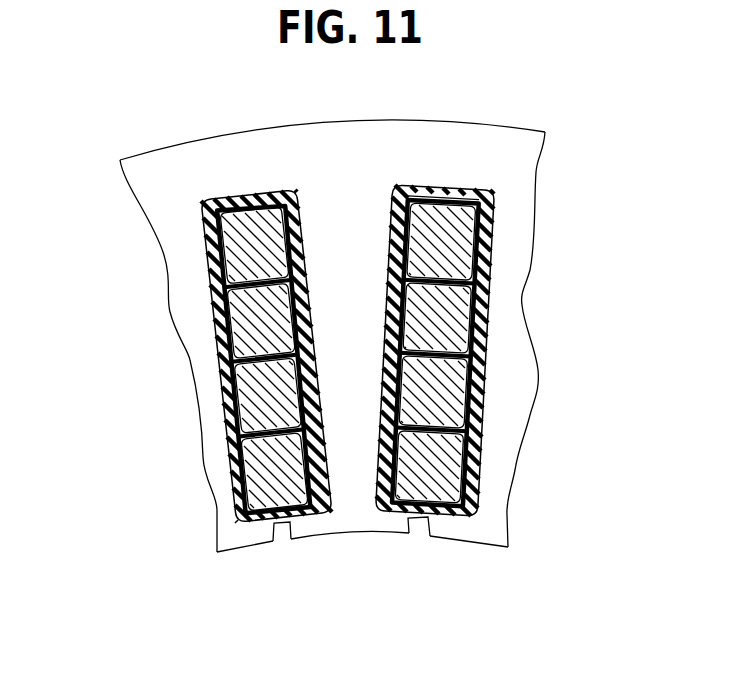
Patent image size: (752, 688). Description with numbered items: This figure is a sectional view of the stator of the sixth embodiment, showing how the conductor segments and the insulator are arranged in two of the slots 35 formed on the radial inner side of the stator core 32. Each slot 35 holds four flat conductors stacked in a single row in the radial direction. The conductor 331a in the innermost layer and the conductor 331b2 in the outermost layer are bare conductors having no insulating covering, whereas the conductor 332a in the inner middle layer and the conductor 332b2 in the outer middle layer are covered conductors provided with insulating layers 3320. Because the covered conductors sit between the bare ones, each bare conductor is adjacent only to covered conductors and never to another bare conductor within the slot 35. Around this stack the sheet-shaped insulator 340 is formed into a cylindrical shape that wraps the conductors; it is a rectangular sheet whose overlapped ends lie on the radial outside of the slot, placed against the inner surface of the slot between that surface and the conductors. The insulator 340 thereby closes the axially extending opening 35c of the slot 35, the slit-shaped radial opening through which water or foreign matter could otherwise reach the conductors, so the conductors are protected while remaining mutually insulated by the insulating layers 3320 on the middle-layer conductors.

The stator core 32 is at (323, 150).
The insulator 340 is at (492, 190).
The conductor in outer most layer 331b2 is at (488, 250).
The conductor in outer middle layer 332b2 is at (488, 303).
The conductor in inner middle layer 332a is at (488, 380).
The conductor in inner most layer 331a is at (458, 463).
The insulating layer 3320 is at (217, 307).
The slot 35 is at (279, 532).
The axially extending opening 35c is at (420, 530).